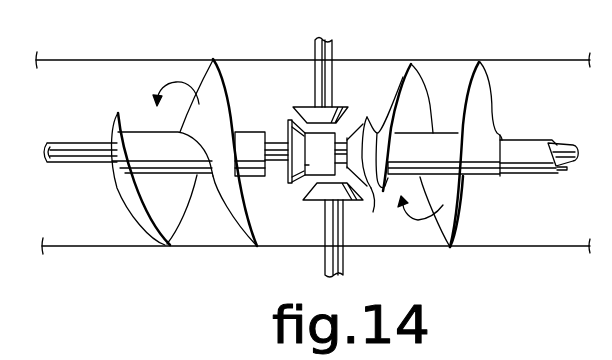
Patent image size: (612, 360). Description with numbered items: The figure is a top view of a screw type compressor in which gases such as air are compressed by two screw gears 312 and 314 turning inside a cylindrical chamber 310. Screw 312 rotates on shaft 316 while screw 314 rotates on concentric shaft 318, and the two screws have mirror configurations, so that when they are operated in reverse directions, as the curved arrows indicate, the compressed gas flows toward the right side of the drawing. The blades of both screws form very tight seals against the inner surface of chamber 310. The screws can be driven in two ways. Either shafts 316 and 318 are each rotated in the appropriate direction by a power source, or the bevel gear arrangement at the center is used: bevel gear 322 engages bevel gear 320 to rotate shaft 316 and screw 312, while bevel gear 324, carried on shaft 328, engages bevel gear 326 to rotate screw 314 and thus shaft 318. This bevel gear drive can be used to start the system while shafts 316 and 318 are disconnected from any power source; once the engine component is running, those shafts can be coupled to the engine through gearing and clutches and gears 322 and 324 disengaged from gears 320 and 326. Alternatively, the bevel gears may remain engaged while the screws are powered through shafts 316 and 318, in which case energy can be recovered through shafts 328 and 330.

The cylindrical chamber 310 is at (108, 60).
The screw gear 312 is at (113, 142).
The screw gear 314 is at (465, 88).
The shaft 316 is at (563, 152).
The concentric shaft 318 is at (527, 166).
The bevel gear 320 is at (289, 120).
The bevel gear 322 is at (367, 117).
The bevel gear 324 is at (318, 188).
The bevel gear 326 is at (381, 211).
The shaft 328 is at (343, 255).
The shaft 330 is at (330, 67).